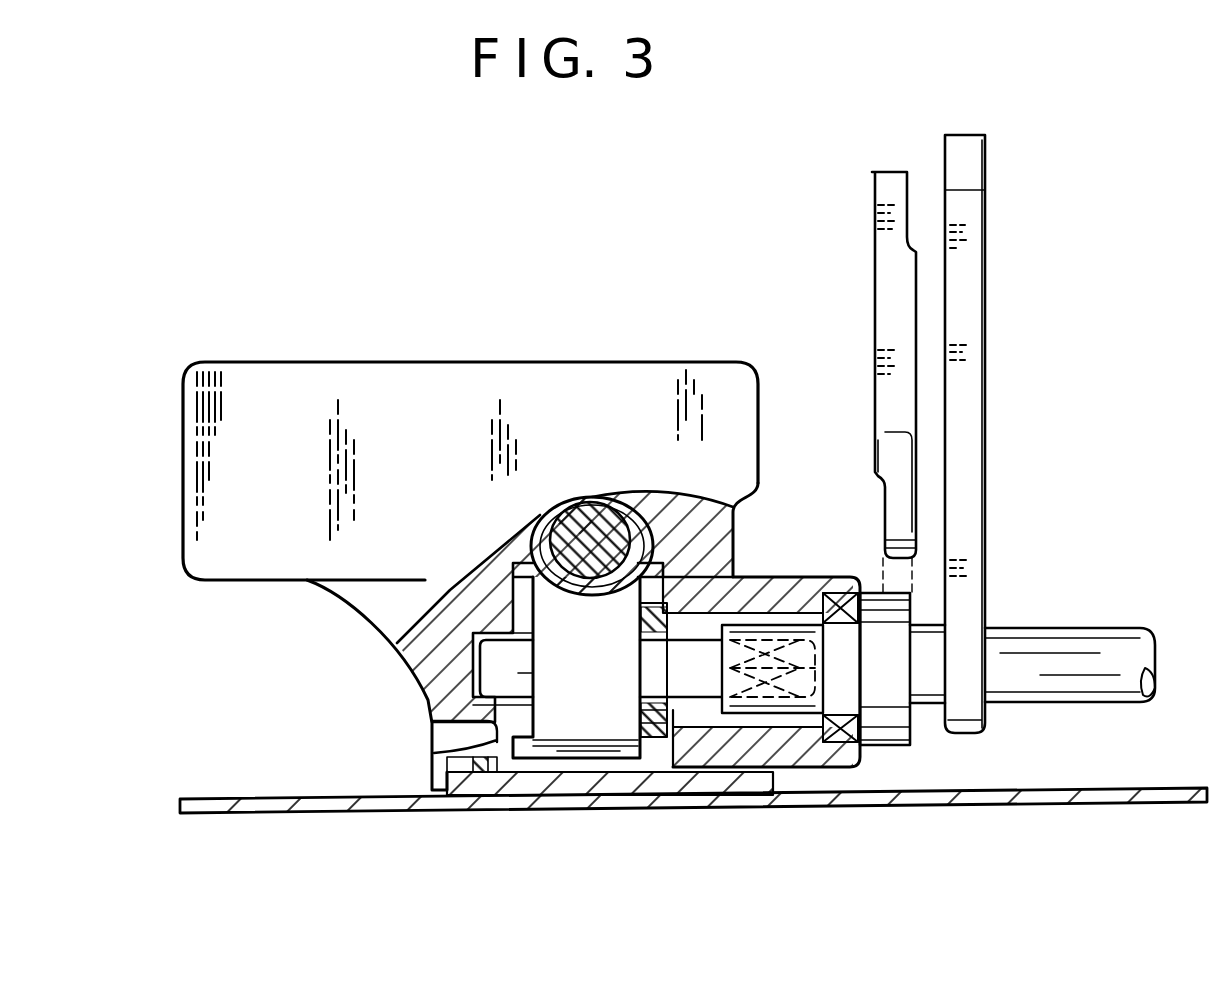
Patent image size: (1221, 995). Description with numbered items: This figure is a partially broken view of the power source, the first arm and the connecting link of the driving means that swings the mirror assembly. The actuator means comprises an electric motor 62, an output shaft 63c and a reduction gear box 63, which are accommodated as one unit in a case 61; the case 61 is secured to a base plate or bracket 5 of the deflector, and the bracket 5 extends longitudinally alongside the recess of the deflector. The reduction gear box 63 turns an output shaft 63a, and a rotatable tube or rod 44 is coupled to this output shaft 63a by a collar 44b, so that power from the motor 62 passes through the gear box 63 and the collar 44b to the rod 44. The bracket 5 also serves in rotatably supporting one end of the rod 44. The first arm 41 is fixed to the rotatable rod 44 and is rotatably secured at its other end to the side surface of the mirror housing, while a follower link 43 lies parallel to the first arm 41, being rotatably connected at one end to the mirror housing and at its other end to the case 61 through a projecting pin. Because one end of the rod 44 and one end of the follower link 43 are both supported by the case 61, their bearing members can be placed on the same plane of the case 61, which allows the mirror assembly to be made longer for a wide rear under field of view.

The base plate or bracket 5 is at (268, 806).
The first arm 41 is at (970, 320).
The follower link 43 is at (883, 274).
The rotatable tube or rod 44 is at (1093, 645).
The collar 44b is at (893, 718).
The case 61 is at (772, 746).
The electric motor 62 is at (463, 388).
The reduction gear box 63 is at (590, 713).
The output shaft of the reduction gear box 63a is at (697, 663).
The output shaft 63c is at (603, 533).